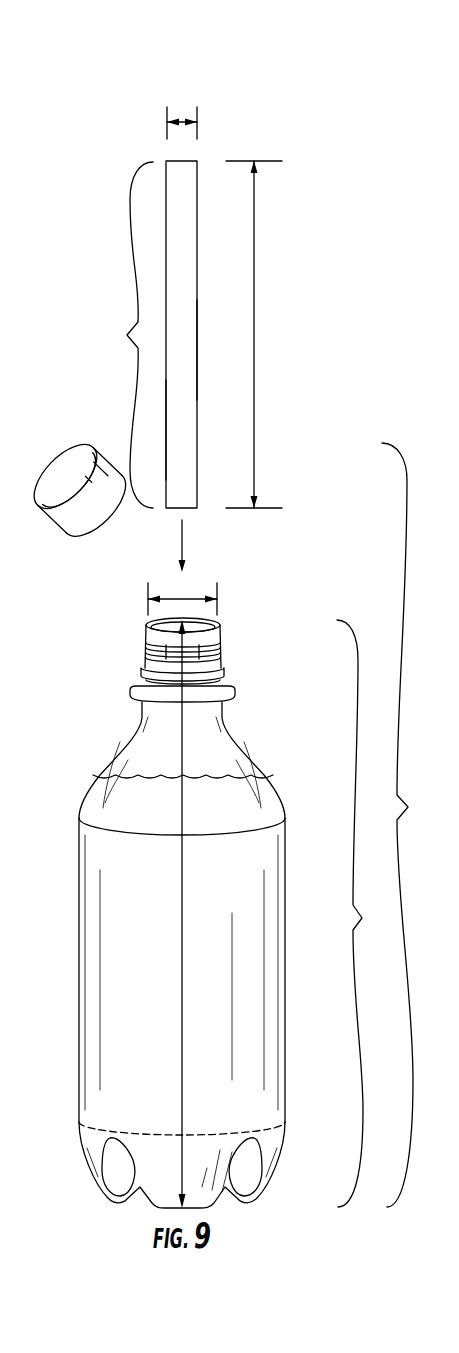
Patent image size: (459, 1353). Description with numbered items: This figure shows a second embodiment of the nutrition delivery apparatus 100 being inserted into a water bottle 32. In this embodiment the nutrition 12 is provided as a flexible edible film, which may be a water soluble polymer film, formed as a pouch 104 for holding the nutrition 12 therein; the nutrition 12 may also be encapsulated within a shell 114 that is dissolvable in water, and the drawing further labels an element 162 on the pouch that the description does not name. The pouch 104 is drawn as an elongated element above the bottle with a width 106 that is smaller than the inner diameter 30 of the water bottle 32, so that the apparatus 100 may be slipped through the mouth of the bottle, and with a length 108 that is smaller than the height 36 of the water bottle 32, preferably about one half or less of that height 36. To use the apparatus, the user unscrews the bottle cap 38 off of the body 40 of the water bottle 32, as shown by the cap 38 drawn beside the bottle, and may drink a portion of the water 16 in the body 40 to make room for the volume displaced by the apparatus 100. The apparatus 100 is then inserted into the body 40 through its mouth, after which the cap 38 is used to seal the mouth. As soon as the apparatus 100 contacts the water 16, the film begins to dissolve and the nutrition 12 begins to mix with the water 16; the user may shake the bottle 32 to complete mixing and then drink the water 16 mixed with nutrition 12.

The nutrition delivery apparatus 100 is at (233, 305).
The width 106 is at (178, 113).
The length 108 is at (256, 352).
The pouch 104 is at (124, 335).
The nutrition 12 is at (180, 275).
The shell 114 is at (198, 340).
The inner surface 162 is at (187, 425).
The bottle cap 38 is at (86, 440).
The inner diameter 30 is at (180, 597).
The water 16 is at (252, 817).
The height 36 is at (182, 887).
The water bottle 32 is at (408, 825).
The body 40 is at (363, 913).